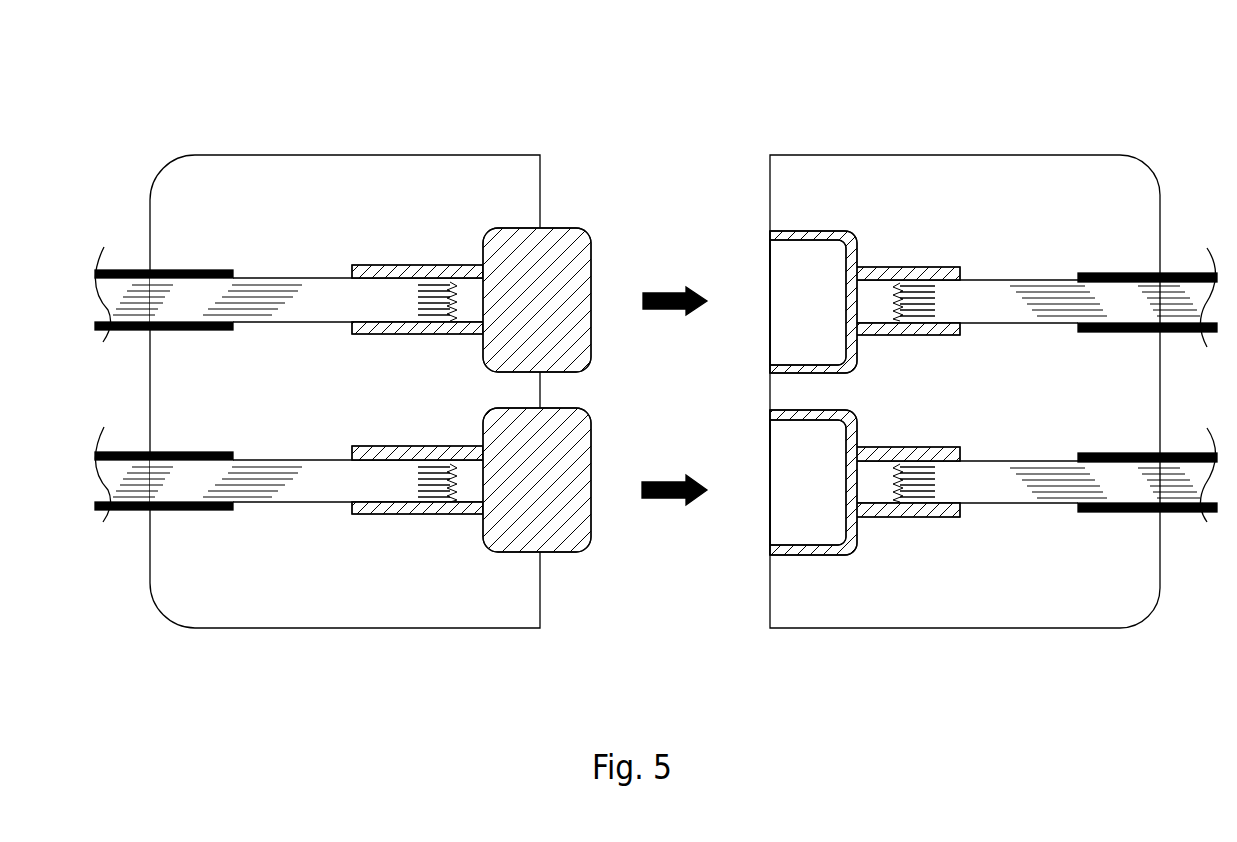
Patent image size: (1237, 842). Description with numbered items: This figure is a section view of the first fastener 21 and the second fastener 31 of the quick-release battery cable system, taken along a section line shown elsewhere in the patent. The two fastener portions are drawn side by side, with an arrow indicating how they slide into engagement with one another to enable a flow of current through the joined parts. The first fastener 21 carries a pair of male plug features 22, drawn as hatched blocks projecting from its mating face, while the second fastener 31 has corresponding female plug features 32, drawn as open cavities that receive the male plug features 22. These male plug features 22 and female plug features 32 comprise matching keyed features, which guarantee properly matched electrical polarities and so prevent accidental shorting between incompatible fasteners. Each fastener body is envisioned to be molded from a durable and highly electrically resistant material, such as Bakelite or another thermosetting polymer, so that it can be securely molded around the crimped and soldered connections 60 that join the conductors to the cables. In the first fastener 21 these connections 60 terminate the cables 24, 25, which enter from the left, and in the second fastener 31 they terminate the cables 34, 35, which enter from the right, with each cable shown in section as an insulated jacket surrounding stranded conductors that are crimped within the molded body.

The first fastener 21 is at (150, 114).
The second fastener 31 is at (1120, 114).
The male plug feature 22 is at (578, 486).
The cable 24 is at (145, 270).
The cable 25 is at (143, 508).
The female plug feature 32 is at (795, 466).
The cable 34 is at (1142, 273).
The cable 35 is at (1165, 513).
The crimped and soldered connections 60 is at (408, 295).